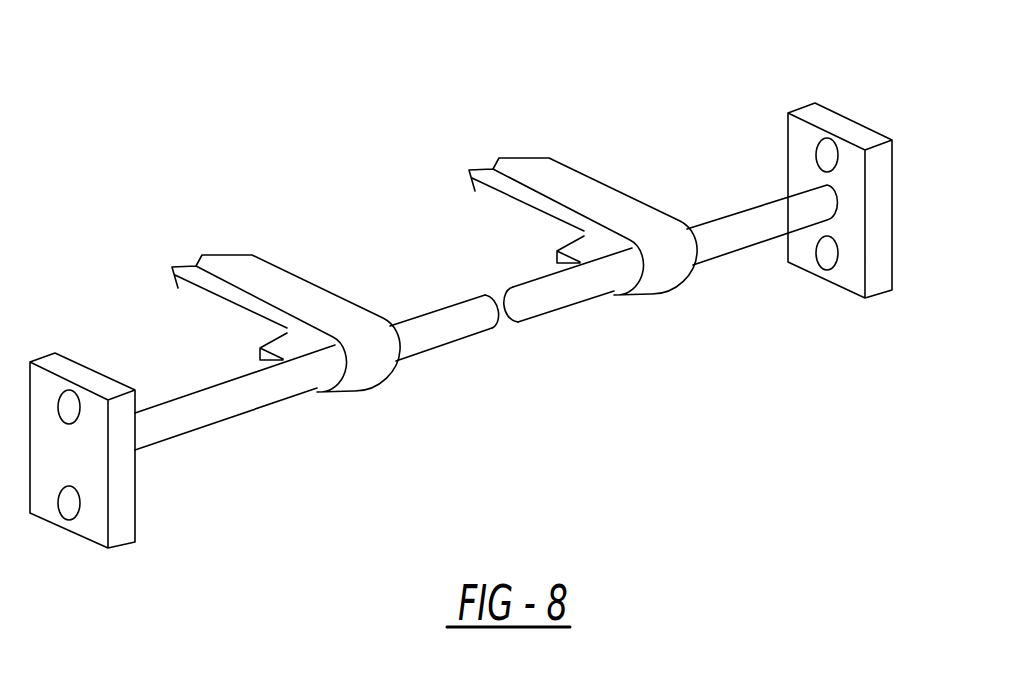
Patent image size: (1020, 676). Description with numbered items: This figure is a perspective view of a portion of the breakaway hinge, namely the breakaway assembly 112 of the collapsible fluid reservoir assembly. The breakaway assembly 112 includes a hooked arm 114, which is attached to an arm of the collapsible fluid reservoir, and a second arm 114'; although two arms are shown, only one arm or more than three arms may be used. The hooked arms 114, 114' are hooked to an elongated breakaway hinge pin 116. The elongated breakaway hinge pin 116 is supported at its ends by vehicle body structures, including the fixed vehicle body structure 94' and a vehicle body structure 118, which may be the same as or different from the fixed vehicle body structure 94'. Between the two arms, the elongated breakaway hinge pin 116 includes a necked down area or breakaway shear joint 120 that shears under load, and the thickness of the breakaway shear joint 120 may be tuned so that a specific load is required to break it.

The breakaway assembly 112 is at (663, 124).
The hooked arm 114 is at (314, 372).
The second arm 114' is at (586, 291).
The elongated breakaway hinge pin 116 is at (230, 403).
The vehicle body structure 118 is at (93, 532).
The breakaway shear joint 120 is at (500, 307).
The fixed vehicle body structure 94' is at (840, 257).